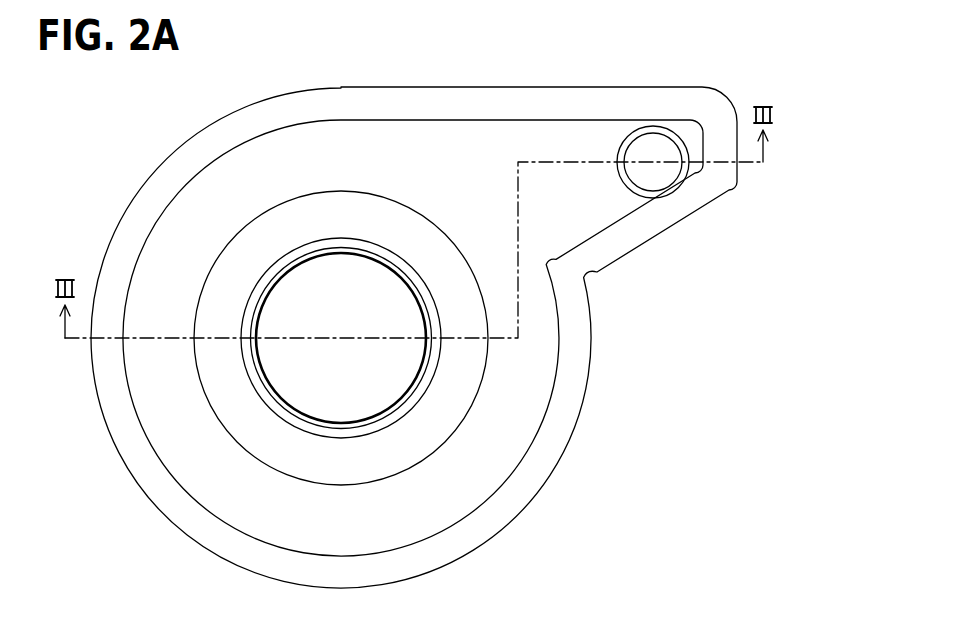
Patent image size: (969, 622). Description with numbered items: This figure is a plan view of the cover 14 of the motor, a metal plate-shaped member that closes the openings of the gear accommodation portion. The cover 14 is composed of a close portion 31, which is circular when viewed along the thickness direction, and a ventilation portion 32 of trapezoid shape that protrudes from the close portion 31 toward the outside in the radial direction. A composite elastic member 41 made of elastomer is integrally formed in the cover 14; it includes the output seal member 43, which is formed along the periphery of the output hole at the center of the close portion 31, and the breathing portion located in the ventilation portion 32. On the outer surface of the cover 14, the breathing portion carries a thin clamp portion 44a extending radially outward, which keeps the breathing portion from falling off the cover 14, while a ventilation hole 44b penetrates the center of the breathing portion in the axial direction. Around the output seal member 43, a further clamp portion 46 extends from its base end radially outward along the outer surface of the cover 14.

The cover 14 is at (586, 72).
The close portion 31 is at (167, 440).
The ventilation portion 32 is at (628, 166).
The composite elastic member 41 is at (341, 359).
The output seal member 43 is at (401, 258).
The clamp portion 44a is at (627, 181).
The ventilation hole 44b is at (651, 182).
The clamp portion 46 is at (373, 481).